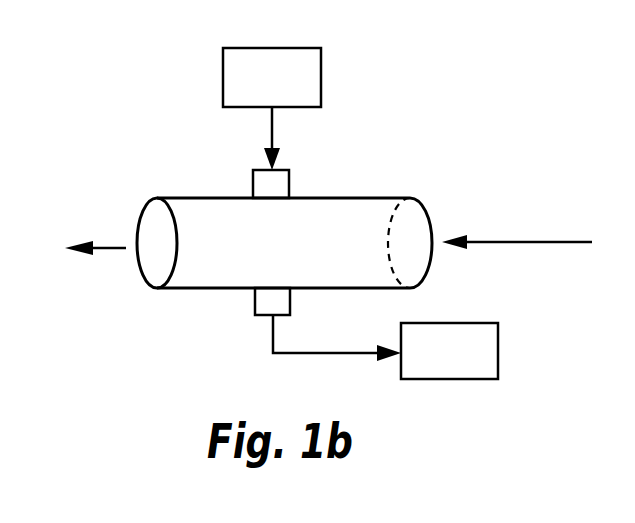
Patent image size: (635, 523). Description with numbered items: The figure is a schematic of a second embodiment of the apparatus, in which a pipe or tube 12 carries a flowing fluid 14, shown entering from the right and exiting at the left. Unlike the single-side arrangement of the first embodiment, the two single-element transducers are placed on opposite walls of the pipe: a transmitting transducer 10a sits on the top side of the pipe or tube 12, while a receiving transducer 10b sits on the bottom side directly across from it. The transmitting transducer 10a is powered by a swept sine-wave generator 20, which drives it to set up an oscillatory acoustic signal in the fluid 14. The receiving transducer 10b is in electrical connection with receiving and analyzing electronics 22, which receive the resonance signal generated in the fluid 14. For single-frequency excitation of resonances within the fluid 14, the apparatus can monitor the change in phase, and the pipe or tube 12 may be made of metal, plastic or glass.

The pipe or tube 12 is at (370, 194).
The transmitting transducer 10a is at (289, 185).
The receiving transducer 10b is at (255, 300).
The fluid 14 is at (634, 17).
The swept sine-wave generator 20 is at (258, 88).
The receiving and analyzing electronics 22 is at (436, 364).